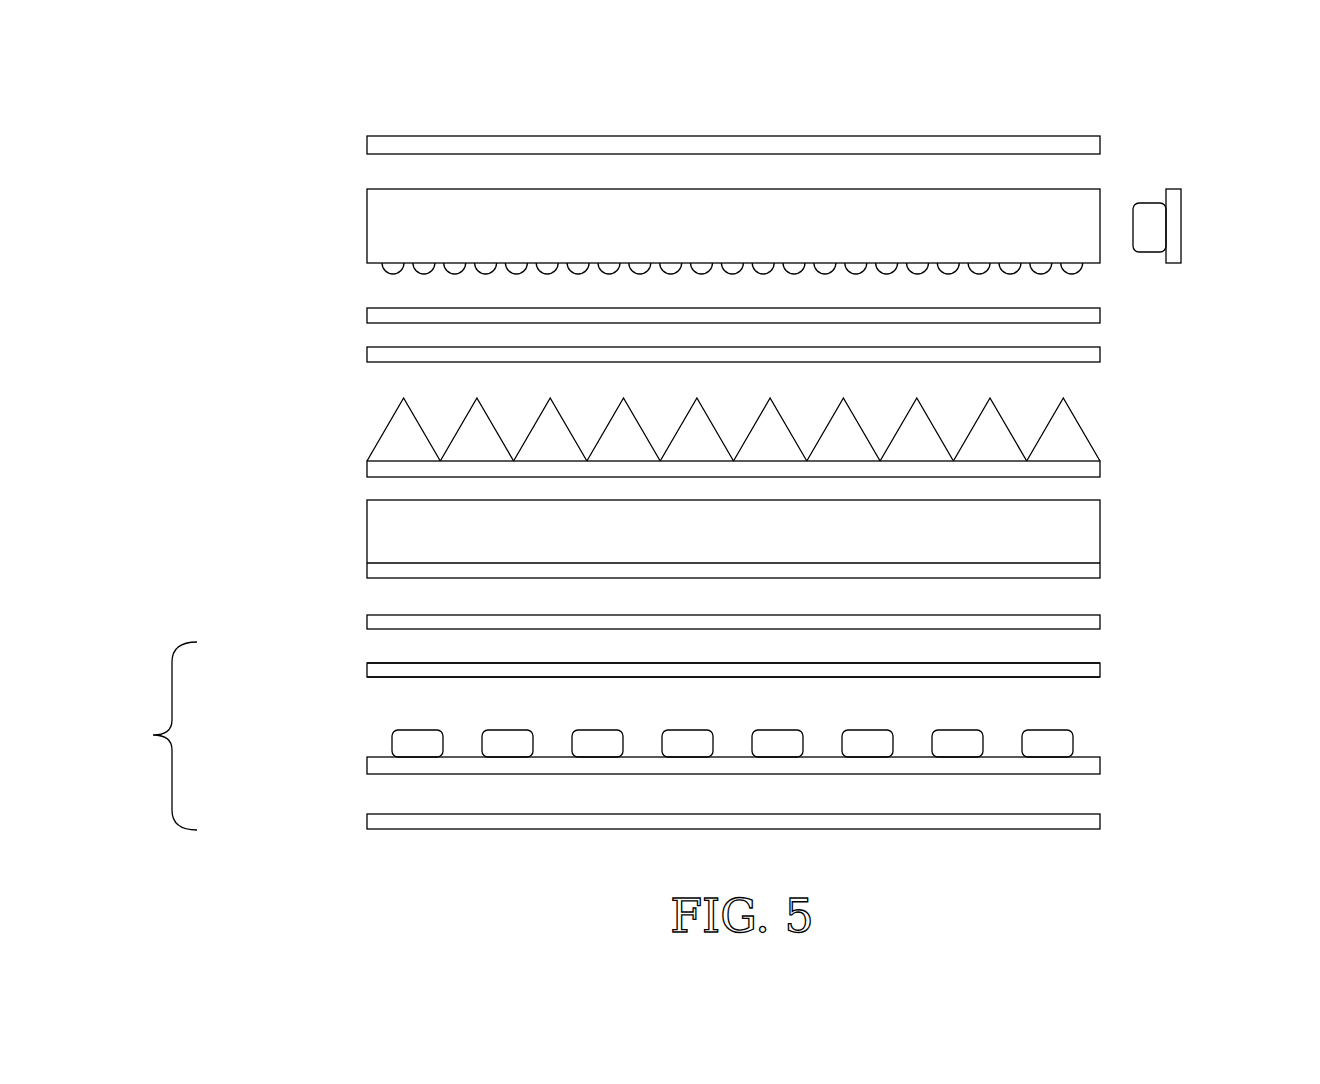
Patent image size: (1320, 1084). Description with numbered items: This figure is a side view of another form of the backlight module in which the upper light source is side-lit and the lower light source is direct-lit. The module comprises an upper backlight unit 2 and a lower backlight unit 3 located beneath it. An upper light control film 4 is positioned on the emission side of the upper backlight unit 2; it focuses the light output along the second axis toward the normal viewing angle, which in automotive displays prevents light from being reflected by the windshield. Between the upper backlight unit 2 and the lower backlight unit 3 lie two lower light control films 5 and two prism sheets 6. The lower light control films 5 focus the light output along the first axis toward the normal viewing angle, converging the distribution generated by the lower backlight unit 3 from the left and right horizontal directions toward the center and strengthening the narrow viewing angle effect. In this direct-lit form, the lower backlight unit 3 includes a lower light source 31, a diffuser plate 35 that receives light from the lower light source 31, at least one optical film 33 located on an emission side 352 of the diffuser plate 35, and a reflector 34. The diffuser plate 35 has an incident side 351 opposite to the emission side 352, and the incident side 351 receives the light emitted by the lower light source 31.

The upper backlight unit 2 is at (1153, 183).
The lower backlight unit 3 is at (162, 736).
The upper light control film 4 is at (365, 140).
The lower light control films 5 is at (365, 318).
The prism sheets 6 is at (365, 535).
The lower light source 31 is at (358, 753).
The optical film 33 is at (365, 622).
The reflector 34 is at (365, 822).
The diffuser plate 35 is at (365, 672).
The incident side 351 is at (1073, 677).
The emission side 352 is at (1073, 662).